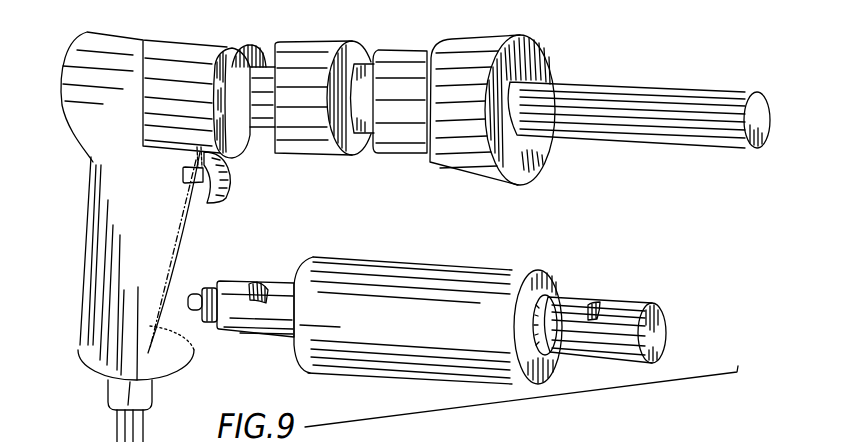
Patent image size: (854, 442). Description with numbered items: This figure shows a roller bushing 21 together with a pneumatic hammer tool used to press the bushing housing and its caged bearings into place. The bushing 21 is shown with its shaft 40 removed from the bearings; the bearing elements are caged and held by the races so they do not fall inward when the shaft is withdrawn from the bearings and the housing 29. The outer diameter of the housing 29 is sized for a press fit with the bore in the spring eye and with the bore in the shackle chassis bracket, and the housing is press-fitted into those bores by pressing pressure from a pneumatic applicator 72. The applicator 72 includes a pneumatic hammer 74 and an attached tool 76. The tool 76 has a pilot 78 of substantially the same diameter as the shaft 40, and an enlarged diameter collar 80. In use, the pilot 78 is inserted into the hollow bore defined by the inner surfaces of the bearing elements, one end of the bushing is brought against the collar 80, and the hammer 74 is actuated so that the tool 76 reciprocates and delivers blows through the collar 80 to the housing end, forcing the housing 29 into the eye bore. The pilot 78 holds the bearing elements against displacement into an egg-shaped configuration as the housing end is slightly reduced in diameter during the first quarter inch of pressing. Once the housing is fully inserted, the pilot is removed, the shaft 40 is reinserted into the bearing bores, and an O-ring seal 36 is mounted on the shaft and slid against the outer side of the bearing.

The pneumatic applicator 72 is at (225, 237).
The pneumatic hammer 74 is at (88, 220).
The tool 76 is at (567, 67).
The pilot 78 is at (692, 97).
The enlarged diameter collar 80 is at (540, 166).
The bushing 21 is at (456, 304).
The housing 29 is at (512, 280).
The O-ring seal 36 is at (541, 318).
The shaft 40 is at (667, 331).